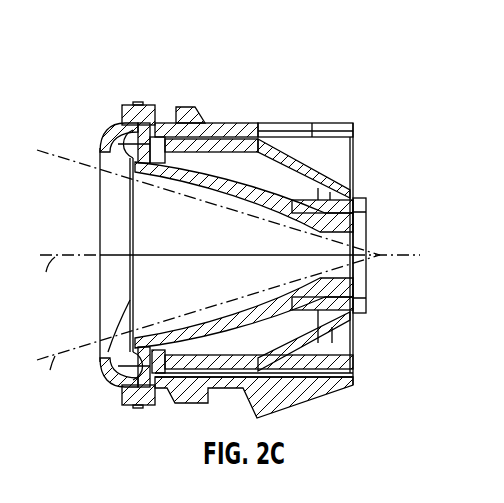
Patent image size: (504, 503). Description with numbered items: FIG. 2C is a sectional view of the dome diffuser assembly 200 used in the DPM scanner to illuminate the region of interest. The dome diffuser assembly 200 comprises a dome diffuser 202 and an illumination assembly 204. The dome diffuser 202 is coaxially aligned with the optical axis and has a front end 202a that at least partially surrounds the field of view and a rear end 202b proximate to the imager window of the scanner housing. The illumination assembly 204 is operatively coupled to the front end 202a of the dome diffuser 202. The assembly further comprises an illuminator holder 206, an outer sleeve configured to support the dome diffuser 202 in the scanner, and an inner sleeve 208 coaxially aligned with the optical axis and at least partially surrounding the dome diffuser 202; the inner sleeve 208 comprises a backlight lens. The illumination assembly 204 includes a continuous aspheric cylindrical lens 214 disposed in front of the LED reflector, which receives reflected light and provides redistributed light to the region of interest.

The dome diffuser assembly 200 is at (226, 230).
The dome diffuser 202 is at (245, 305).
The front end of the dome diffuser 202a is at (125, 406).
The rear end of the dome diffuser 202b is at (376, 252).
The illumination assembly 204 is at (98, 273).
The illuminator holder 206 is at (184, 106).
The inner sleeve 208 is at (257, 140).
The continuous aspheric cylindrical lens 214 is at (99, 170).